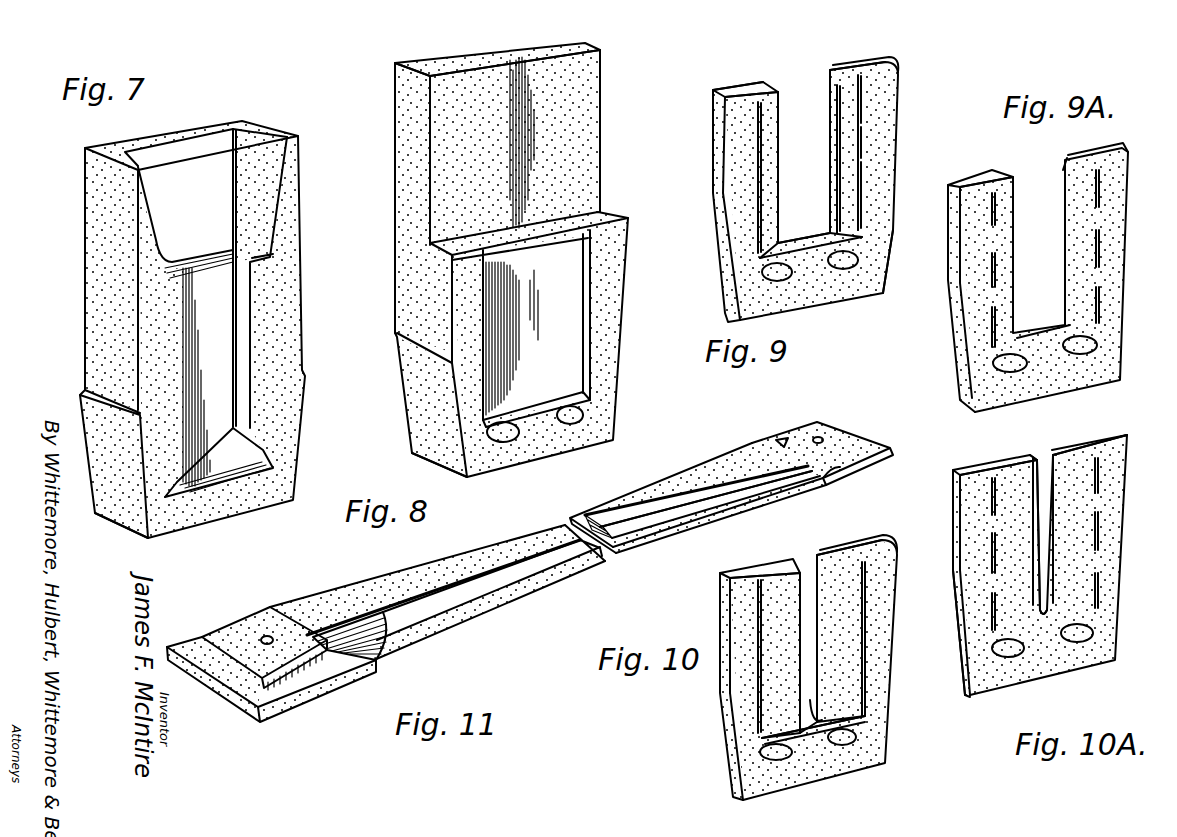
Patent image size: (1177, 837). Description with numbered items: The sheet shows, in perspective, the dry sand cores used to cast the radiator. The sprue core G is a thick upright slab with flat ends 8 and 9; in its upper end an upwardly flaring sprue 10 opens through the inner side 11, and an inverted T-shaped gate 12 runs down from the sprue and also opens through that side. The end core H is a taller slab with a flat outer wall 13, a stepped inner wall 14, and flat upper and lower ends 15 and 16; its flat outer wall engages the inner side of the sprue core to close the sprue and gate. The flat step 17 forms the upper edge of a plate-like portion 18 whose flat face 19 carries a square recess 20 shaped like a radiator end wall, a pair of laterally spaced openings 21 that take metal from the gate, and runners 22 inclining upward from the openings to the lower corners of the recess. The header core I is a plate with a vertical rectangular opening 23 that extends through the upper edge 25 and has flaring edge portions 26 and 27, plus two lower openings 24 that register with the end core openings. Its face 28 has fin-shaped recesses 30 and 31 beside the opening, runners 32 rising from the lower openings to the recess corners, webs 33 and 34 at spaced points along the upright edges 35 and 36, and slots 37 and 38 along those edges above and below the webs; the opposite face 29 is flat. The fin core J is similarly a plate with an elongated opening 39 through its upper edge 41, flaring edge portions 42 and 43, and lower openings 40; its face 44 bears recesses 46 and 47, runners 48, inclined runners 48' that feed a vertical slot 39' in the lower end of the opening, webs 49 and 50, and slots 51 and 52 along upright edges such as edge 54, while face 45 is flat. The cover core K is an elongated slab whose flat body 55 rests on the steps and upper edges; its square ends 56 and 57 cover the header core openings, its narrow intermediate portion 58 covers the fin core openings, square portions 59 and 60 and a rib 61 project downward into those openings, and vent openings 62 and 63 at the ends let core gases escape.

In FIG. 7, the sprue core G is at (297, 343).
In FIG. 7, the flat end 8 is at (150, 540).
In FIG. 7, the flat end 9 is at (103, 155).
In FIG. 7, the sprue 10 is at (255, 150).
In FIG. 7, the inner side 11 is at (297, 273).
In FIG. 7, the gate 12 is at (240, 393).
In FIG. 8, the end core H is at (592, 176).
In FIG. 8, the flat outer wall 13 is at (397, 243).
In FIG. 8, the stepped inner wall 14 is at (597, 127).
In FIG. 8, the upper end 15 is at (428, 62).
In FIG. 8, the lower end 16 is at (457, 483).
In FIG. 8, the step 17 is at (615, 215).
In FIG. 8, the plate-like portion 18 is at (422, 310).
In FIG. 8, the flat face 19 is at (617, 297).
In FIG. 8, the recess 20 is at (576, 360).
In FIG. 8, the opening 21 is at (568, 425).
In FIG. 8, the runner 22 is at (590, 397).
In FIG. 9, the header core I is at (893, 175).
In FIG. 9, the opening 23 is at (808, 97).
In FIG. 9, the opening 24 is at (848, 266).
In FIG. 9, the upper edge 25 is at (743, 82).
In FIG. 9, the flaring edge portion 26 is at (832, 68).
In FIG. 9, the flaring edge portion 27 is at (780, 89).
In FIG. 9, the face 28 is at (883, 213).
In FIG. 9, the recess 30 is at (776, 193).
In FIG. 9, the recess 31 is at (850, 153).
In FIG. 9, the runner 32 is at (862, 243).
In FIG. 9, the web 33 is at (860, 127).
In FIG. 9, the web 34 is at (862, 187).
In FIG. 9, the upright edge 35 is at (760, 208).
In FIG. 9, the upright edge 36 is at (862, 152).
In FIG. 9, the slot 37 is at (758, 250).
In FIG. 9A, the slot 37 is at (1100, 308).
In FIG. 9A, the face 29 is at (1123, 229).
In FIG. 9A, the slot 38 is at (988, 338).
In FIG. 10, the face 44 is at (887, 610).
In FIG. 10, the opening 40 is at (850, 740).
In FIG. 10A, the opening 40 is at (1080, 641).
In FIG. 10, the recess 46 is at (775, 670).
In FIG. 10, the recess 47 is at (850, 687).
In FIG. 10, the runner 48 is at (848, 741).
In FIG. 10, the runner 48' is at (813, 760).
In FIG. 10, the web 49 is at (863, 668).
In FIG. 10, the web 50 is at (862, 608).
In FIG. 10, the upright edge 54 is at (867, 575).
In FIG. 10A, the fin core J is at (1122, 508).
In FIG. 10A, the opening 39 is at (1057, 509).
In FIG. 10A, the vertical slot 39' is at (1044, 645).
In FIG. 10A, the upper edge 41 is at (1093, 444).
In FIG. 10A, the flaring edge portion 42 is at (1030, 450).
In FIG. 10A, the flaring edge portion 43 is at (1070, 443).
In FIG. 10A, the face 45 is at (1118, 558).
In FIG. 10A, the slot 51 is at (992, 628).
In FIG. 10A, the slot 52 is at (1100, 598).
In FIG. 11, the cover core K is at (430, 620).
In FIG. 11, the flat body 55 is at (493, 583).
In FIG. 11, the end 56 is at (287, 692).
In FIG. 11, the end 57 is at (837, 470).
In FIG. 11, the intermediate portion 58 is at (550, 560).
In FIG. 11, the square shaped portion 59 is at (237, 635).
In FIG. 11, the square shaped portion 60 is at (807, 432).
In FIG. 11, the rib 61 is at (420, 590).
In FIG. 11, the opening 62 is at (273, 636).
In FIG. 11, the opening 63 is at (823, 440).